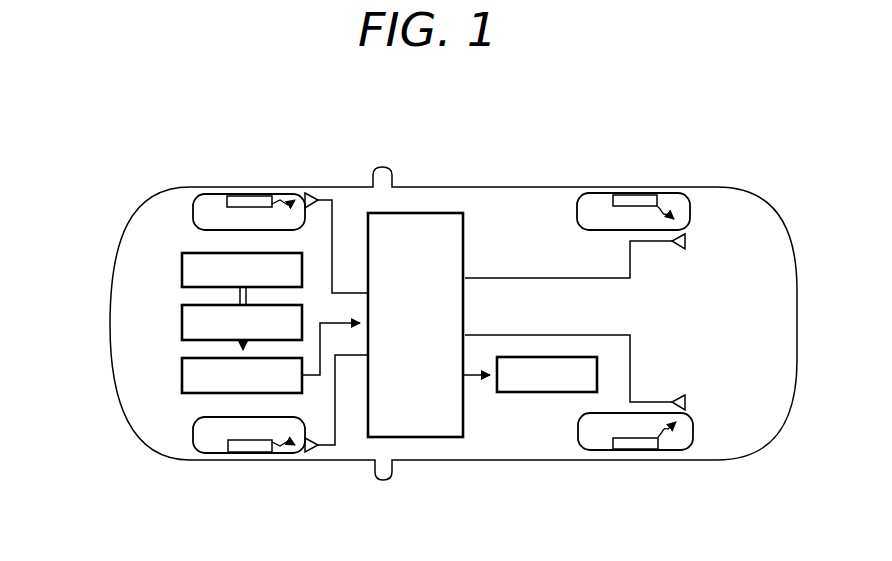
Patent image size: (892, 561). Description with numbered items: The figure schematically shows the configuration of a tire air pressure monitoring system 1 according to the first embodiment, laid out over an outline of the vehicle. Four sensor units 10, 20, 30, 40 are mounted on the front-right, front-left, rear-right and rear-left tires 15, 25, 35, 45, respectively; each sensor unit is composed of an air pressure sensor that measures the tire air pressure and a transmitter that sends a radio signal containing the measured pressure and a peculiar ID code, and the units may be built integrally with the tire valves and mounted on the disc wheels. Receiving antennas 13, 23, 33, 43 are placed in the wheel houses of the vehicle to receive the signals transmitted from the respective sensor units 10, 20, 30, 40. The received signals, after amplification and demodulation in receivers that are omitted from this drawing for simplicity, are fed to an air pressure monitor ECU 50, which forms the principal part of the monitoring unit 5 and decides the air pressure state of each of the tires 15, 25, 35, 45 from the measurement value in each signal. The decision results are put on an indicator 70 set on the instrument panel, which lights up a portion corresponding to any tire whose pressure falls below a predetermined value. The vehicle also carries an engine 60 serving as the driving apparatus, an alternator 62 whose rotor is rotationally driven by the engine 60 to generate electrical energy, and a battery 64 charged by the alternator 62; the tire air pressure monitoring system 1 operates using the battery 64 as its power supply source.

The tire air pressure monitoring system 1 is at (212, 116).
The monitoring unit 5 is at (488, 172).
The sensor unit 10 is at (252, 195).
The receiving antenna 13 is at (314, 193).
The tire 15 is at (210, 205).
The sensor unit 20 is at (253, 453).
The receiving antenna 23 is at (315, 455).
The tire 25 is at (212, 443).
The sensor unit 30 is at (640, 195).
The receiving antenna 33 is at (692, 234).
The tire 35 is at (598, 205).
The sensor unit 40 is at (640, 450).
The receiving antenna 43 is at (692, 409).
The tire 45 is at (600, 440).
The air pressure monitor ECU 50 is at (443, 213).
The engine 60 is at (182, 265).
The alternator 62 is at (182, 318).
The battery 64 is at (182, 372).
The indicator 70 is at (530, 393).